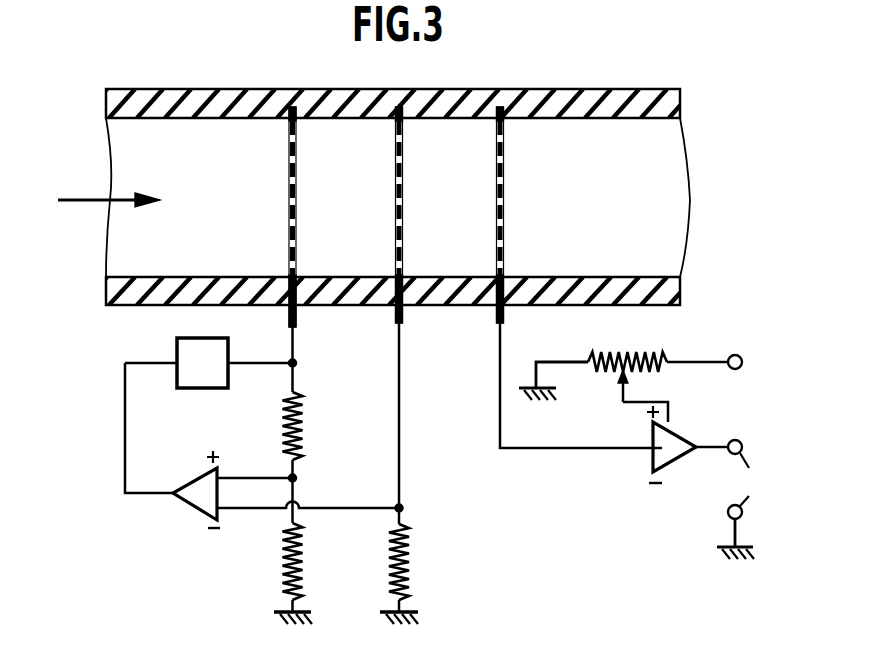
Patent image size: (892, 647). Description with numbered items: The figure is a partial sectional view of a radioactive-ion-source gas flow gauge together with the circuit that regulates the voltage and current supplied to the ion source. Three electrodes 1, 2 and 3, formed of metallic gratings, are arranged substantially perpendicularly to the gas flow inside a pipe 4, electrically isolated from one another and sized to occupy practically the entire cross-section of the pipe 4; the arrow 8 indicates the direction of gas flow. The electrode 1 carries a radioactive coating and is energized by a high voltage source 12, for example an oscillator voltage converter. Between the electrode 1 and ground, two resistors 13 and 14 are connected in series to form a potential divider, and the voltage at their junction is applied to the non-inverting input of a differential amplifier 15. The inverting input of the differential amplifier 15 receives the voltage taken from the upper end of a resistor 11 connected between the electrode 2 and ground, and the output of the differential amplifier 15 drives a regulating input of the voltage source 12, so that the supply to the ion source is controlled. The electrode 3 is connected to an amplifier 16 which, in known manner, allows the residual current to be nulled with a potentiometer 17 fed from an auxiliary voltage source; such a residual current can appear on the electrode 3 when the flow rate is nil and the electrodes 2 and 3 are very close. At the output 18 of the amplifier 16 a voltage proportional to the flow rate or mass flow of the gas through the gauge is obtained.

The electrode 1 is at (285, 199).
The electrode 2 is at (392, 199).
The electrode 3 is at (504, 178).
The pipe 4 is at (234, 106).
The arrow 8 is at (109, 186).
The resistor 11 is at (409, 567).
The high voltage source 12 is at (197, 372).
The resistor 13 is at (301, 427).
The resistor 14 is at (282, 567).
The differential amplifier 15 is at (198, 500).
The amplifier 16 is at (663, 445).
The potentiometer 17 is at (612, 351).
The output 18 is at (743, 499).